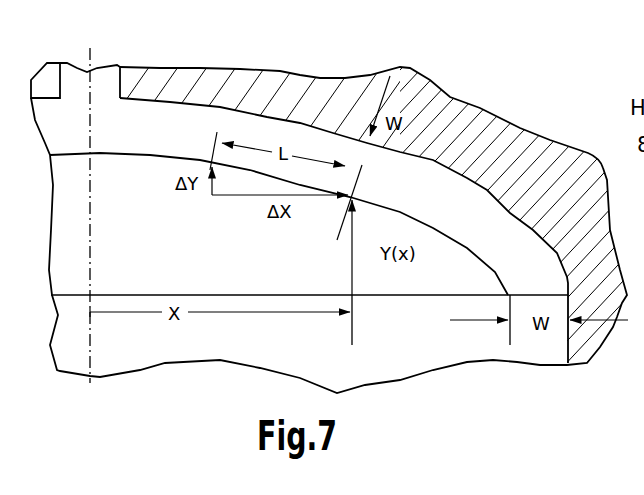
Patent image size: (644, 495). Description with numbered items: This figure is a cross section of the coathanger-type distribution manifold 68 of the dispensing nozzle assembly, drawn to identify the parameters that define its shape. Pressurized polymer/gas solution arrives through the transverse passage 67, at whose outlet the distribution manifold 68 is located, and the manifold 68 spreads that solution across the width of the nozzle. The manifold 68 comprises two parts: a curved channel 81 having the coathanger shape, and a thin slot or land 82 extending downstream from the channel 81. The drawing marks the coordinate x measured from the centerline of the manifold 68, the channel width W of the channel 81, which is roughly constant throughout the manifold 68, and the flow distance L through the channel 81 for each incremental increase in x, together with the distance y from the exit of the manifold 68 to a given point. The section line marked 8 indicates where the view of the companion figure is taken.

The transverse passage 67 is at (112, 85).
The distribution manifold 68 is at (475, 92).
The curved channel 81 is at (487, 207).
The slot or land 82 is at (428, 280).
The section line 8- 8 is at (351, 67).